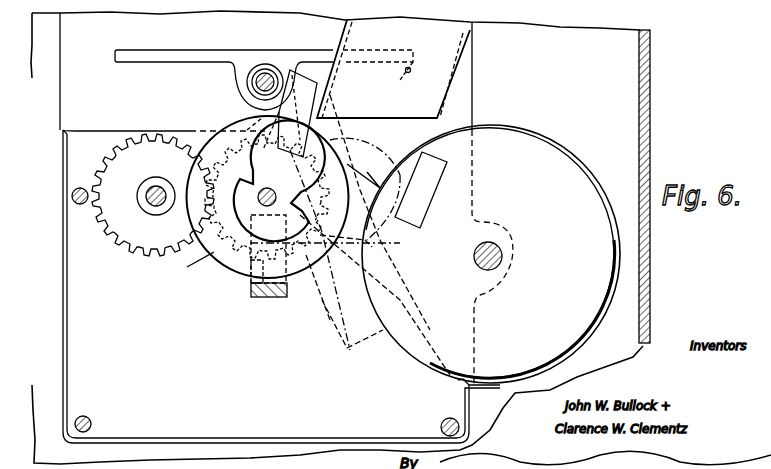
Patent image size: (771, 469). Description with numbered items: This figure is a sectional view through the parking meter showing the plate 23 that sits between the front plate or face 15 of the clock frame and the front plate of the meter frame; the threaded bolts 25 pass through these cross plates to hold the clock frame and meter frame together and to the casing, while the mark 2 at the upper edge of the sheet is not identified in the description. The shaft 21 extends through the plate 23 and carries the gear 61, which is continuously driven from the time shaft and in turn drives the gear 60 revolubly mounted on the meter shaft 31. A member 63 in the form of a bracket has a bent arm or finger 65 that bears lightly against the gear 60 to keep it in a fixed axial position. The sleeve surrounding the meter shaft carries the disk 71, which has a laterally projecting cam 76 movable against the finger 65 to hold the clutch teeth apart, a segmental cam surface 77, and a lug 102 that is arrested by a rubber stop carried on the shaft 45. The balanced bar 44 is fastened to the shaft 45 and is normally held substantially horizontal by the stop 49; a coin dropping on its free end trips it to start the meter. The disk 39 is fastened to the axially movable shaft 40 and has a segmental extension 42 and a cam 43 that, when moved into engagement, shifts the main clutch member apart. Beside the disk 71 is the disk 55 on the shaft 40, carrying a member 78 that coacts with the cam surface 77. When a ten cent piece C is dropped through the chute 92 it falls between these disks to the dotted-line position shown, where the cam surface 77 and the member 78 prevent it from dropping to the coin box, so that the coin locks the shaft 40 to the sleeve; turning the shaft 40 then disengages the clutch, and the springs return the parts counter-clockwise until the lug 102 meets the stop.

The side wall 2 is at (636, 3).
The front plate 15 is at (63, 333).
The shaft 21 is at (157, 186).
The plate 23 is at (72, 138).
The threaded bolts 25 is at (87, 204).
The meter shaft 31 is at (268, 188).
The disk 39 is at (506, 127).
The axially movable shaft 40 is at (501, 250).
The segmental extension 42 is at (384, 163).
The cam 43 is at (328, 250).
The balanced bar 44 is at (208, 50).
The shaft 45 is at (264, 70).
The stop 49 is at (407, 74).
The disk 55 is at (553, 158).
The gear 60 is at (247, 130).
The gear 61 is at (146, 140).
The bracket 63 is at (270, 298).
The finger 65 is at (257, 286).
The disk 71 is at (187, 265).
The laterally projecting cam 76 is at (236, 272).
The segmental cam surface 77 is at (267, 197).
The member 78 is at (420, 210).
The chute 92 is at (443, 83).
The lug 102 is at (310, 43).
The ten cent piece C is at (393, 160).